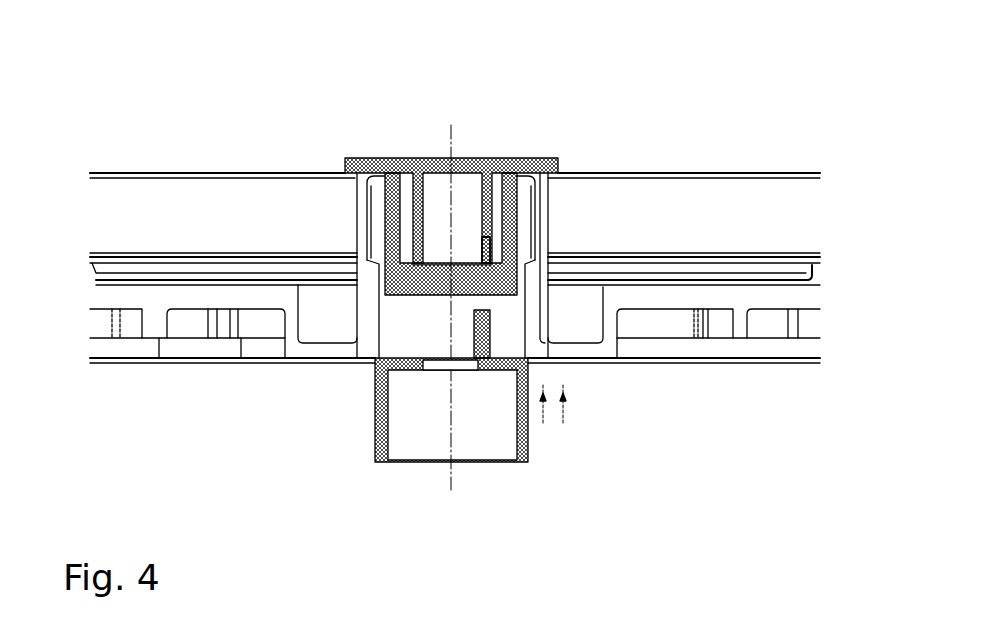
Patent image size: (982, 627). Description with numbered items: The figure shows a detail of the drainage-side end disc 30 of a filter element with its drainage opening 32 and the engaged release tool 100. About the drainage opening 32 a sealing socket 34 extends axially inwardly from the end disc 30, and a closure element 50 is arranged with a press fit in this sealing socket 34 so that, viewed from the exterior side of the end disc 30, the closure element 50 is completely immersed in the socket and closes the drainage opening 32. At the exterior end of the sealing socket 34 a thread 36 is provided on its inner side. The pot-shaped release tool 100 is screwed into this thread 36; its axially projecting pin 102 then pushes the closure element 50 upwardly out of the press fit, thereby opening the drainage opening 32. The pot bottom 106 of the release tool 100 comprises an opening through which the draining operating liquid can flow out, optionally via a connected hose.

The end disc 30 is at (749, 169).
The drainage opening 32 is at (366, 372).
The sealing socket 34 is at (550, 223).
The thread 36 is at (371, 283).
The closure element 50 is at (523, 158).
The release tool 100 is at (372, 442).
The pin 102 is at (490, 337).
The pot bottom 106 is at (415, 355).